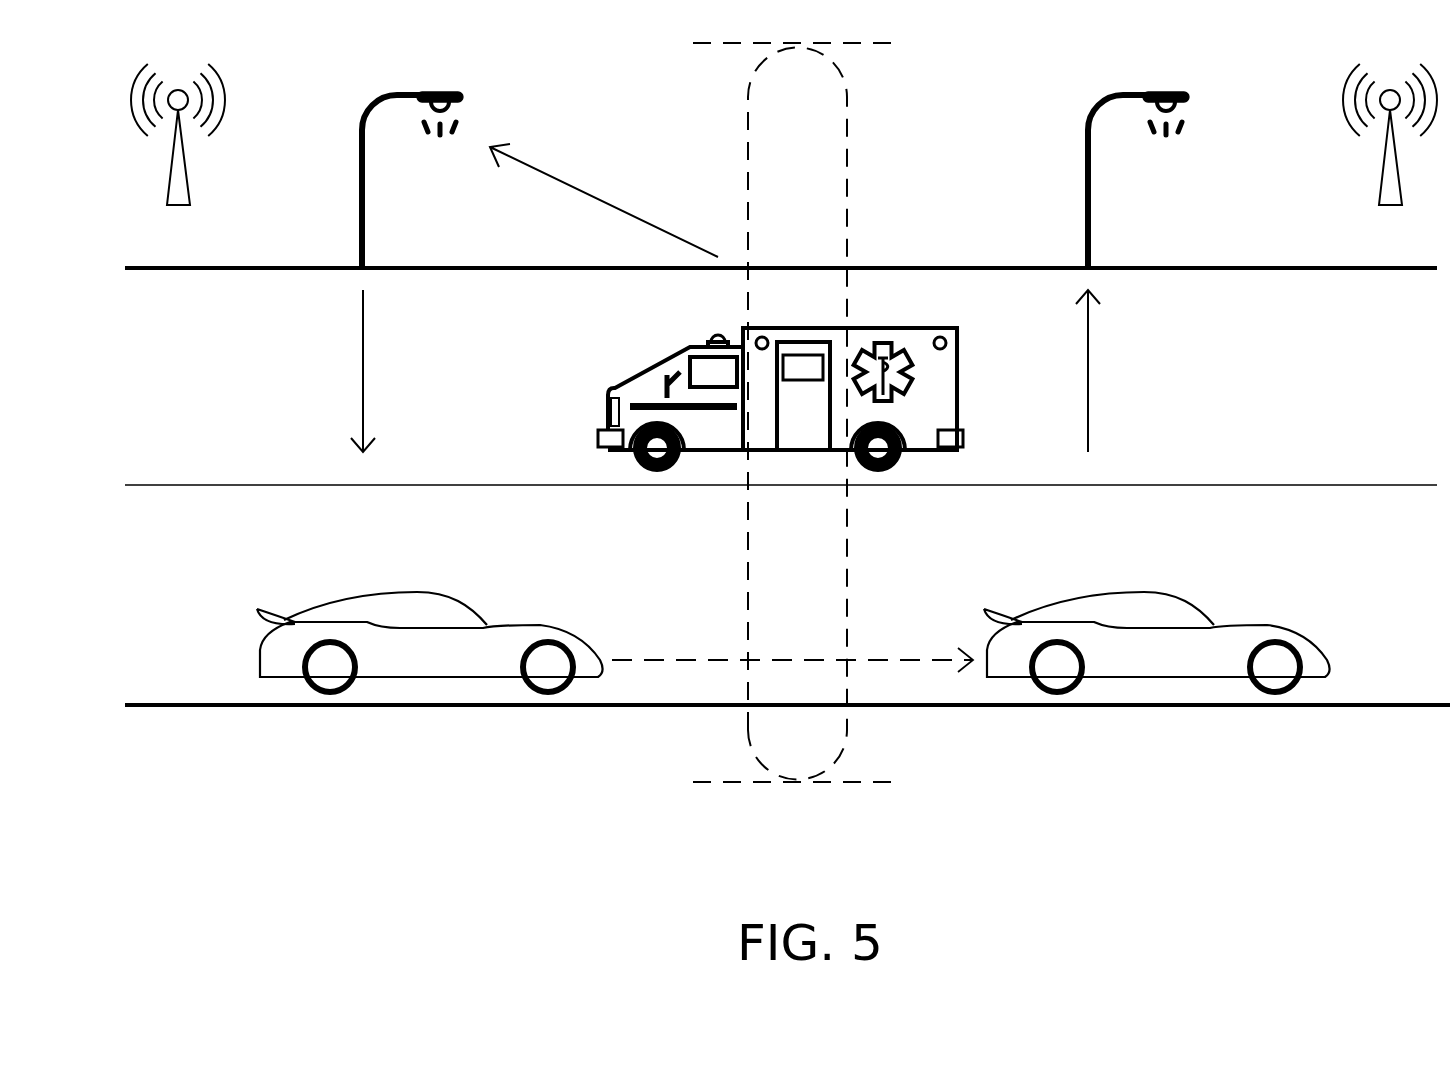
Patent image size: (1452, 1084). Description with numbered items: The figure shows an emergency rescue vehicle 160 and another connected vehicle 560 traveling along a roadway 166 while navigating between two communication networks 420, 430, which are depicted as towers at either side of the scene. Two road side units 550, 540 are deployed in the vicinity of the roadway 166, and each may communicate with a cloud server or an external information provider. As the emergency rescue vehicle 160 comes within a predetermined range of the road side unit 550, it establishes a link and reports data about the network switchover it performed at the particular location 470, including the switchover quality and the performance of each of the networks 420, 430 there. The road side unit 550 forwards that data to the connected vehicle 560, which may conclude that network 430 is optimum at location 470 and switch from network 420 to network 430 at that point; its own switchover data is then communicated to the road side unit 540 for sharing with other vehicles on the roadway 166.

The emergency rescue vehicle 160 is at (923, 323).
The roadway 166 is at (981, 448).
The communication network 420 is at (178, 152).
The communication network 430 is at (1390, 153).
The location 470 is at (796, 412).
The road side unit 540 is at (1169, 175).
The road side unit 550 is at (444, 175).
The connected vehicle 560 is at (258, 657).